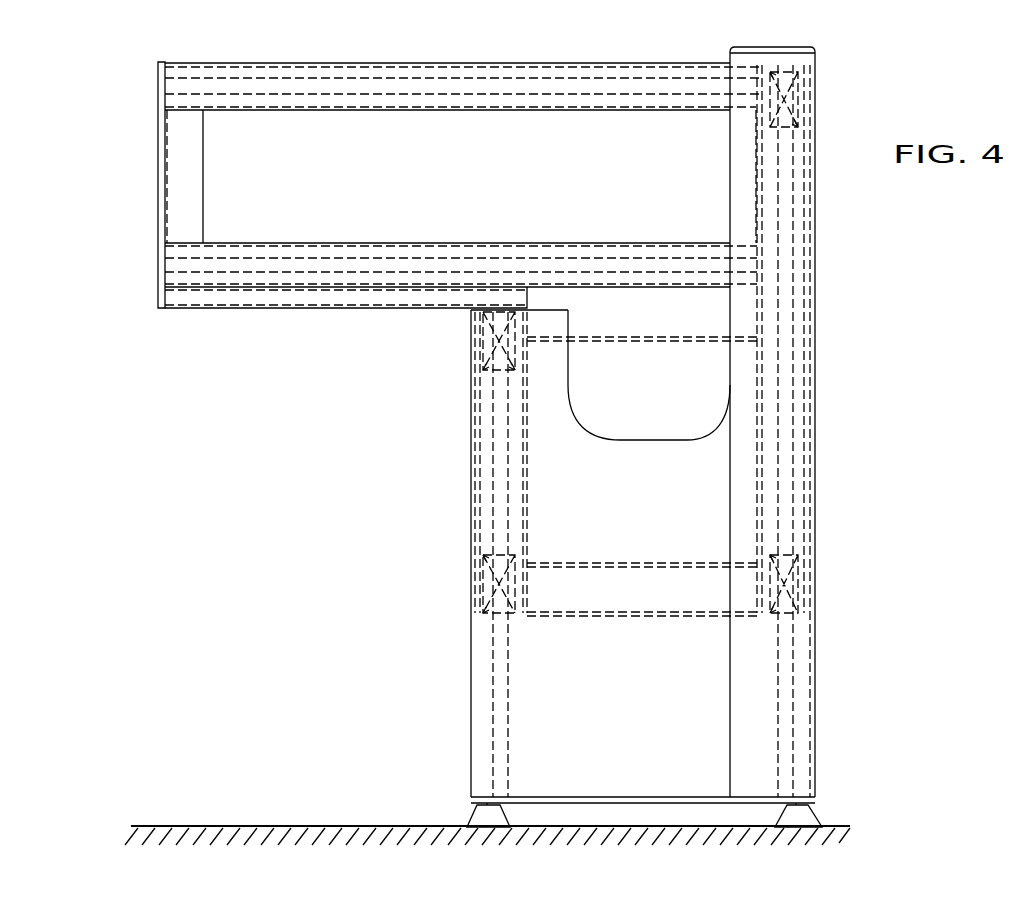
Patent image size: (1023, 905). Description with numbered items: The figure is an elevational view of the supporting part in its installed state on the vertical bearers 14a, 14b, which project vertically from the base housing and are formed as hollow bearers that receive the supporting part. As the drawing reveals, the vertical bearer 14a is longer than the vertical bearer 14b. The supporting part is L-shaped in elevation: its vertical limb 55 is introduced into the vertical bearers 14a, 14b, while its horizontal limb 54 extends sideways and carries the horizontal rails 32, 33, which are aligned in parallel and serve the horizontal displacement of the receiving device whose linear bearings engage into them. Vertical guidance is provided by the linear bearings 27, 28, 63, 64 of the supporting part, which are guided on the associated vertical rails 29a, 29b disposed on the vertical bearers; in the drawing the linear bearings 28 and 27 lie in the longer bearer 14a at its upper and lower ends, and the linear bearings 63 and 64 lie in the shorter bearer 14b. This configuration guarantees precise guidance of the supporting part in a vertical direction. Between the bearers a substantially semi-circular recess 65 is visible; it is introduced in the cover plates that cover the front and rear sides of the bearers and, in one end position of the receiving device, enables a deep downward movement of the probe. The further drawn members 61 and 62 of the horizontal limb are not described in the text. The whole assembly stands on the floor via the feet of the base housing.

The vertical bearer 14a is at (815, 294).
The vertical bearer 14b is at (471, 428).
The linear bearing 27 is at (800, 588).
The linear bearing 28 is at (805, 96).
The vertical rail 29a is at (787, 707).
The vertical rail 29b is at (493, 710).
The horizontal rail 32 is at (268, 263).
The horizontal rail 33 is at (478, 88).
The horizontal limb 54 is at (281, 77).
The vertical limb 55 is at (808, 500).
The lower horizontal beam 61 is at (337, 270).
The cross member 62 is at (403, 137).
The linear bearing 63 is at (476, 360).
The linear bearing 64 is at (478, 585).
The semi-circular recess 65 is at (713, 395).